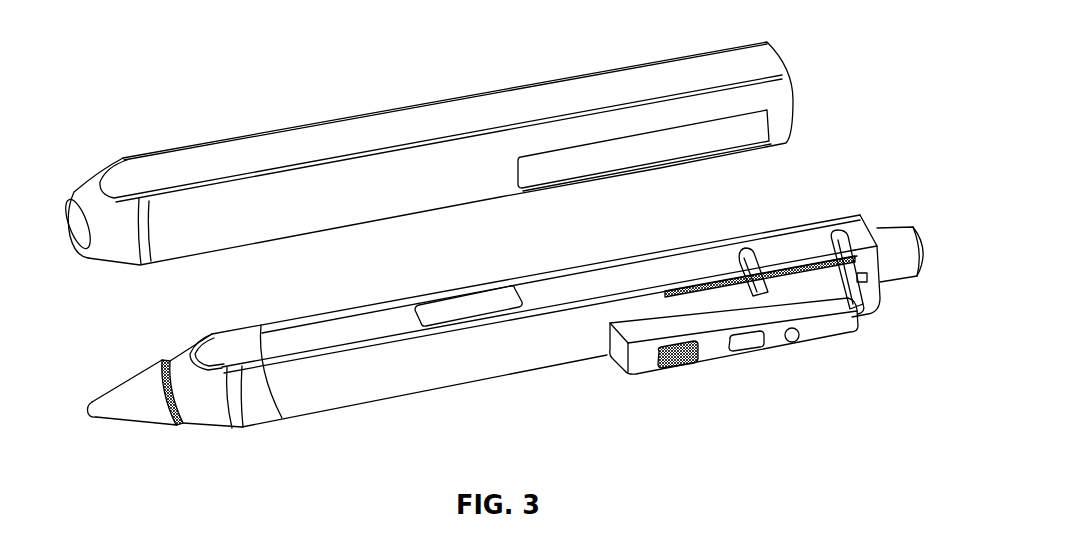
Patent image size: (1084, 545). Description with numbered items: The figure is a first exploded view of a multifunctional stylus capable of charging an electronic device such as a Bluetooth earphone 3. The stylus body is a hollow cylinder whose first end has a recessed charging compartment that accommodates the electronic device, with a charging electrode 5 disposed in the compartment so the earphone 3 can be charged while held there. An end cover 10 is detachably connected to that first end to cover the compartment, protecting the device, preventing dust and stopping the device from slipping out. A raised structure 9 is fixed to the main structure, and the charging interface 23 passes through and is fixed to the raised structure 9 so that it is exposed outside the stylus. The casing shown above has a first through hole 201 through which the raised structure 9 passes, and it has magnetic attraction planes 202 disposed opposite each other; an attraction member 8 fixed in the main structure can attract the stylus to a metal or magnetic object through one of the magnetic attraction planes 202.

The Bluetooth earphone 3 is at (897, 247).
The charging electrode 5 is at (752, 262).
The attraction member 8 is at (479, 302).
The raised structure 9 is at (770, 366).
The end cover 10 is at (142, 401).
The charging interface 23 is at (675, 364).
The first through hole 201 is at (665, 143).
The magnetic attraction plane 202 is at (237, 157).